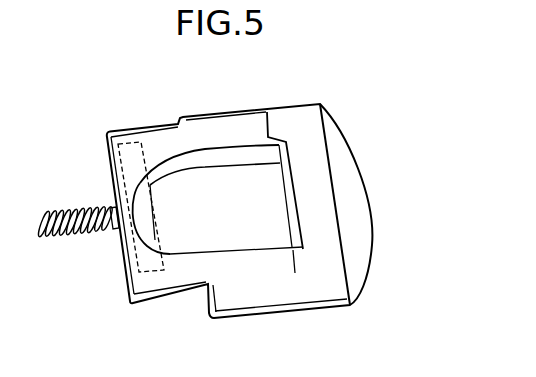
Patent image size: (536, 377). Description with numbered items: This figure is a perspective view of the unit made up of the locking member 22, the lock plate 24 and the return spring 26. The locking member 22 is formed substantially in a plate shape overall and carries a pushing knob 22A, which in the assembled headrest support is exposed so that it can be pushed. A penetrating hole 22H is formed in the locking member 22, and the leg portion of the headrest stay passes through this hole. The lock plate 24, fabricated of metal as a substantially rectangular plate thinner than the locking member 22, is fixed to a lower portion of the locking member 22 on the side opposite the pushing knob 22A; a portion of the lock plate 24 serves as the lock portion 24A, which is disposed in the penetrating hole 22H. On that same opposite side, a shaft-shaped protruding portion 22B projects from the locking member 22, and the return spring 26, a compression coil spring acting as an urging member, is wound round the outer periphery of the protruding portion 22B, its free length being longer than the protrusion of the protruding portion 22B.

The locking member 22 is at (356, 113).
The pushing knob 22A is at (363, 183).
The protruding portion 22B is at (110, 211).
The penetrating hole 22H is at (234, 246).
The lock plate 24 is at (141, 160).
The lock portion 24A is at (138, 203).
The return spring 26 is at (85, 241).